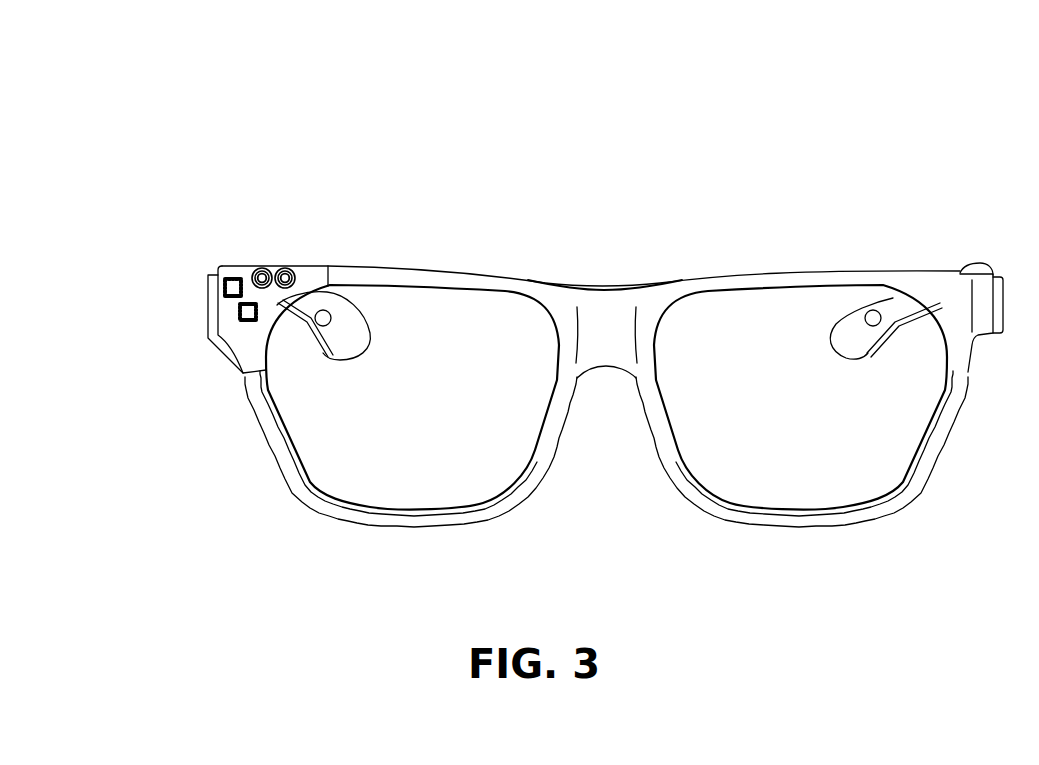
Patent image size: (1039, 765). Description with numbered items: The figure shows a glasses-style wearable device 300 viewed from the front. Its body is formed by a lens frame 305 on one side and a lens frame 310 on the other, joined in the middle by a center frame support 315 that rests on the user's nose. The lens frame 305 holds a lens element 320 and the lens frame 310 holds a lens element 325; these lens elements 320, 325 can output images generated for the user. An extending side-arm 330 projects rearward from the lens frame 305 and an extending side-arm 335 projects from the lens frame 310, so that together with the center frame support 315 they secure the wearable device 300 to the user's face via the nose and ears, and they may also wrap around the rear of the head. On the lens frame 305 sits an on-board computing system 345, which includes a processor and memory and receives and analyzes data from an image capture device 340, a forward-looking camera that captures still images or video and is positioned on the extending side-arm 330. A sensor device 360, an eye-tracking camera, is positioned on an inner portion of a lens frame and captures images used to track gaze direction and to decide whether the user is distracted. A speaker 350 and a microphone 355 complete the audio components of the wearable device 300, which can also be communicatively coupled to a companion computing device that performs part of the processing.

The wearable device 300 is at (557, 117).
The lens frame 305 is at (466, 256).
The lens frame 310 is at (866, 258).
The center frame support 315 is at (602, 311).
The lens element 320 is at (384, 475).
The lens element 325 is at (848, 443).
The extending side-arm 330 is at (315, 291).
The extending side-arm 335 is at (894, 320).
The image capture device 340 is at (288, 269).
The on-board computing system 345 is at (235, 277).
The speaker 350 is at (322, 322).
The microphone 355 is at (237, 319).
The sensor device 360 is at (262, 268).